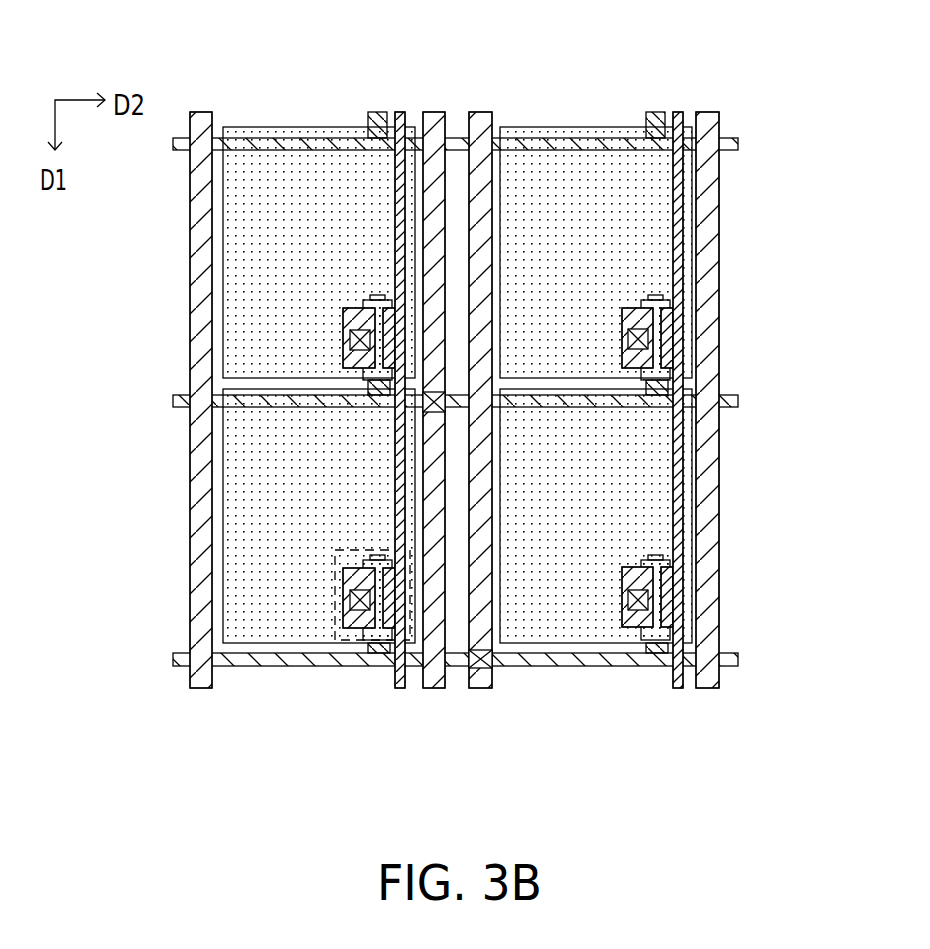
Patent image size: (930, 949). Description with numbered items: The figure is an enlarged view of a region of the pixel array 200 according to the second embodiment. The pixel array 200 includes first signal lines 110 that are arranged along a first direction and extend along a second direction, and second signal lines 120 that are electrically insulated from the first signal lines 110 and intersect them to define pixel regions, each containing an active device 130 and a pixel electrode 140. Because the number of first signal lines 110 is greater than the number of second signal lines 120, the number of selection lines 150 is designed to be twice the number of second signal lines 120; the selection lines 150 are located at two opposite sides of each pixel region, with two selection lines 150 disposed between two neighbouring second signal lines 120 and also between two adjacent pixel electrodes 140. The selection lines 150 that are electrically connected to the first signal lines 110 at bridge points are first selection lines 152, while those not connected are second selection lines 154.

The first signal line 110 is at (175, 662).
The second signal line 120 is at (402, 668).
The active device 130 is at (340, 606).
The pixel electrode 140 is at (297, 177).
The selection line 150 is at (447, 350).
The first selection line 152 is at (462, 350).
The second selection line 154 is at (707, 133).
The pixel array 200 is at (460, 392).